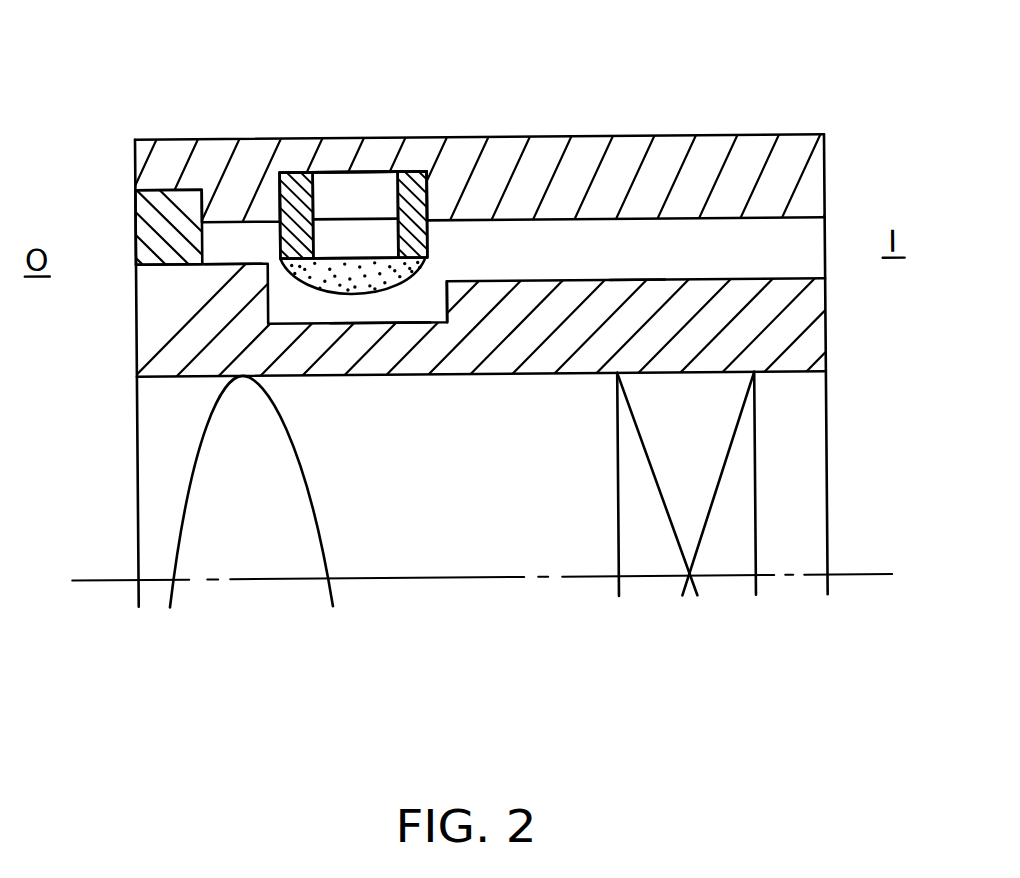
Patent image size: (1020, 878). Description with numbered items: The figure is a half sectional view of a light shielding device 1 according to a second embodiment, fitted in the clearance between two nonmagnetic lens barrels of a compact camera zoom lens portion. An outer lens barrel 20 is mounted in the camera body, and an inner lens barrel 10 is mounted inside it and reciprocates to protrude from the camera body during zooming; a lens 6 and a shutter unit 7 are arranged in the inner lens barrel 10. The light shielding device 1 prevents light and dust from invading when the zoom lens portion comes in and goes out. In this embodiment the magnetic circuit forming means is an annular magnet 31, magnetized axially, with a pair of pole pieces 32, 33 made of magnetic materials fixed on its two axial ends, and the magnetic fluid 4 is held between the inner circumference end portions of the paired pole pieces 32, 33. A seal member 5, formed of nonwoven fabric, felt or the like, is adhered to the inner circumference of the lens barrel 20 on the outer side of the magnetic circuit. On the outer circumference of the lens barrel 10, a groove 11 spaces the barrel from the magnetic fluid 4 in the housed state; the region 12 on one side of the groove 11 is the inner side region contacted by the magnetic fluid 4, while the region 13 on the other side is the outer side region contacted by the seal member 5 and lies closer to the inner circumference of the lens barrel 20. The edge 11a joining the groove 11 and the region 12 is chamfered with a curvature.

The light shielding device 1 is at (328, 128).
The magnetic fluid 4 is at (305, 277).
The seal member 5 is at (136, 221).
The lens 6 is at (242, 560).
The shutter unit 7 is at (732, 565).
The lens barrel 10 is at (797, 328).
The groove 11 is at (375, 322).
The edge 11a is at (441, 308).
The region 12 is at (637, 281).
The region 13 is at (230, 262).
The outer lens barrel 20 is at (587, 138).
The annular magnet 31 is at (348, 183).
The pole piece 32 is at (293, 171).
The pole piece 33 is at (412, 171).